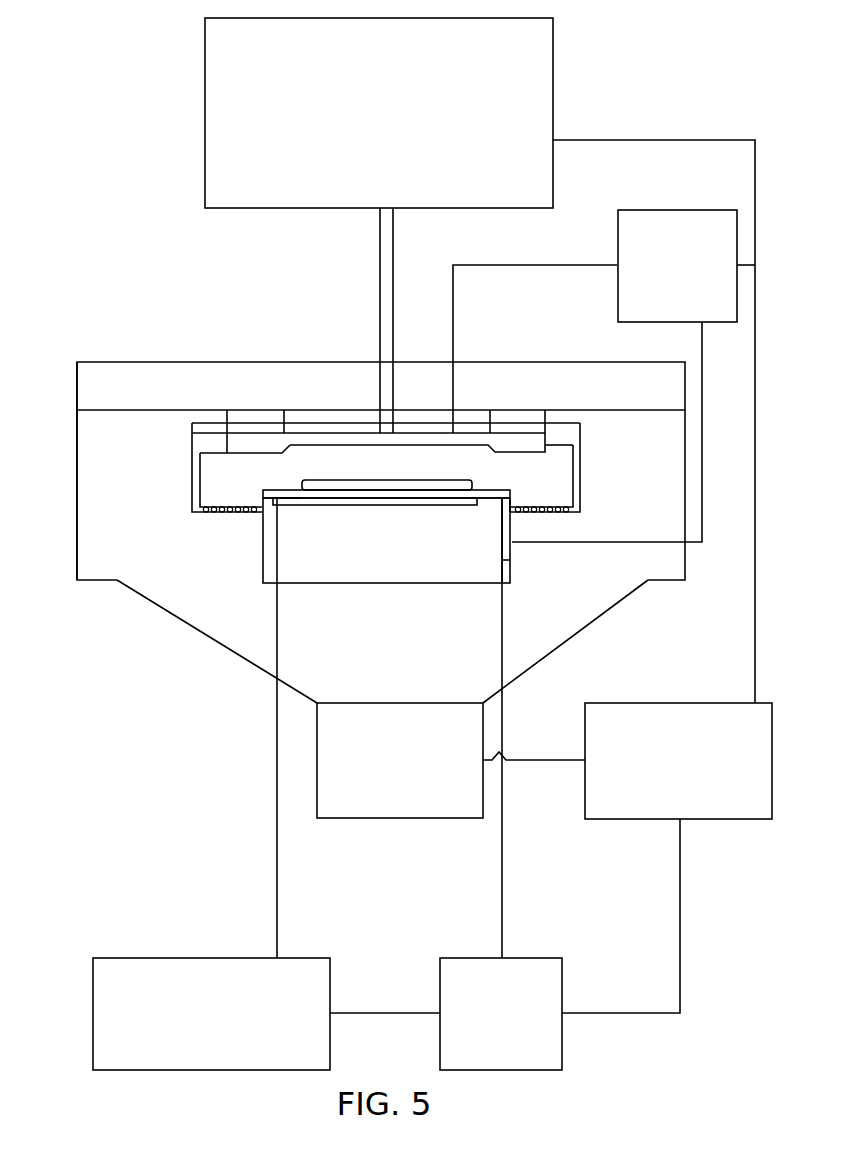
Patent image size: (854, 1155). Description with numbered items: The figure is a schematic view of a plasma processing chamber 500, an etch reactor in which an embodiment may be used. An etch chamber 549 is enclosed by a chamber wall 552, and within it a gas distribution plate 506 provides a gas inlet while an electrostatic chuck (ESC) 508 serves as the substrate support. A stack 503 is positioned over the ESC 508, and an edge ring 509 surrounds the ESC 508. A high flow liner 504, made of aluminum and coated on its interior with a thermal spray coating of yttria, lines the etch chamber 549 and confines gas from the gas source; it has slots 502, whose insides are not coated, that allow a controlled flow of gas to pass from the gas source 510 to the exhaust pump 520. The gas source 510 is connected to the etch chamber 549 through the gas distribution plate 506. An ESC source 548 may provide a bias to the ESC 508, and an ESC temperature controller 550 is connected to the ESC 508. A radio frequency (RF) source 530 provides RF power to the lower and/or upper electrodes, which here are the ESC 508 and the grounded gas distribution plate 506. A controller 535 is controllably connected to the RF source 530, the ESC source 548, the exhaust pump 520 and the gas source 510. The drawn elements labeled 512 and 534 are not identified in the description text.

The plasma processing chamber 500 is at (609, 42).
The gas source 510 is at (379, 113).
The radio frequency (RF) source 530 is at (677, 266).
The exhaust pump 520 is at (382, 699).
The controller 535 is at (678, 761).
The ESC temperature controller 550 is at (211, 1014).
The ESC source 548 is at (501, 1014).
The etch chamber 549 is at (58, 422).
The chamber wall 552 is at (77, 505).
The gas distribution plate 506 is at (299, 442).
The high flow liner 504 is at (190, 502).
The slots 502 is at (518, 503).
The electrostatic chuck 512 is at (270, 508).
The edge ring 509 is at (263, 500).
The electrostatic chuck (ESC) 508 is at (300, 489).
The stack 503 is at (550, 510).
The coolant channel 534 is at (512, 562).